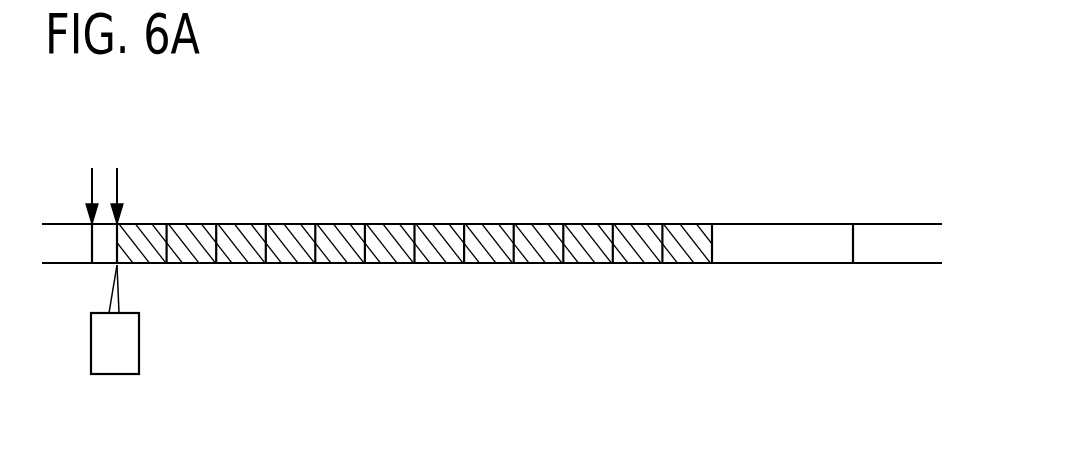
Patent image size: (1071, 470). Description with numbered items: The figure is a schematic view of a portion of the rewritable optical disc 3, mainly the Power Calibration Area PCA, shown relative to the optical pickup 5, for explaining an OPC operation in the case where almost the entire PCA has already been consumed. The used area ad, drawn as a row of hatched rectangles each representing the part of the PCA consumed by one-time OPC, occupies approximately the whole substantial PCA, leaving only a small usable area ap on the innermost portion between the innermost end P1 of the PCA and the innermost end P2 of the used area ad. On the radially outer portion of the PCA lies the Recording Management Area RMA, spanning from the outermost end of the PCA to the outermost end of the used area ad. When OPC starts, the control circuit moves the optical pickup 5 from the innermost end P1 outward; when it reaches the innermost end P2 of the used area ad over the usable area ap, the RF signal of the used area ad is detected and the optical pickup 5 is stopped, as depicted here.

The rewritable optical disc 3 is at (482, 142).
The optical pickup 5 is at (113, 363).
The usable area ap is at (107, 237).
The innermost end of the PCA P1 is at (92, 172).
The innermost end of the used area P2 is at (120, 180).
The used area ad is at (706, 217).
The Recording Management Area RMA is at (853, 213).
The Power Calibration Area PCA is at (855, 270).